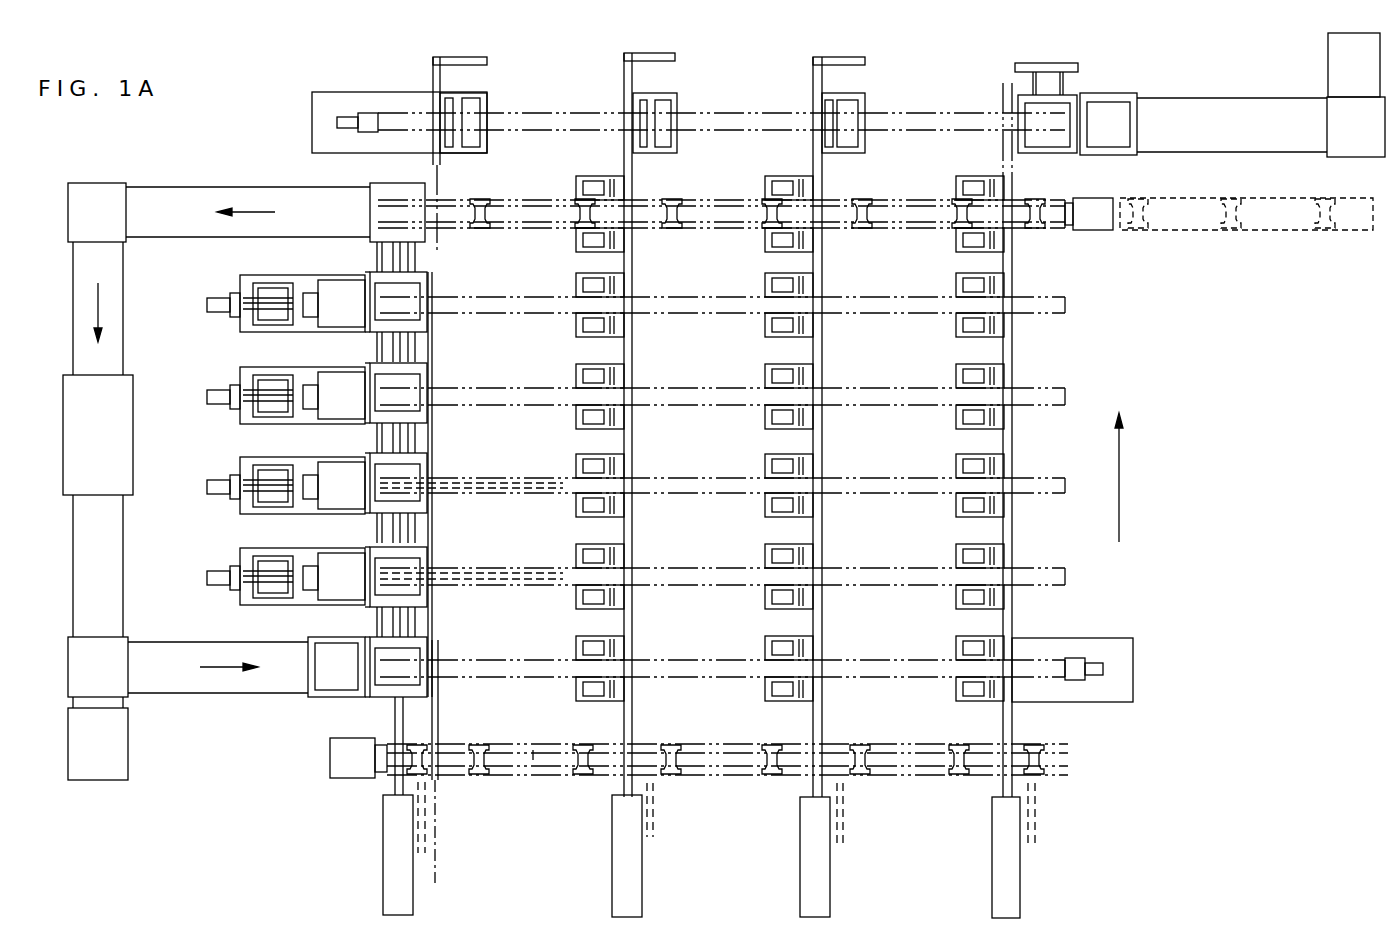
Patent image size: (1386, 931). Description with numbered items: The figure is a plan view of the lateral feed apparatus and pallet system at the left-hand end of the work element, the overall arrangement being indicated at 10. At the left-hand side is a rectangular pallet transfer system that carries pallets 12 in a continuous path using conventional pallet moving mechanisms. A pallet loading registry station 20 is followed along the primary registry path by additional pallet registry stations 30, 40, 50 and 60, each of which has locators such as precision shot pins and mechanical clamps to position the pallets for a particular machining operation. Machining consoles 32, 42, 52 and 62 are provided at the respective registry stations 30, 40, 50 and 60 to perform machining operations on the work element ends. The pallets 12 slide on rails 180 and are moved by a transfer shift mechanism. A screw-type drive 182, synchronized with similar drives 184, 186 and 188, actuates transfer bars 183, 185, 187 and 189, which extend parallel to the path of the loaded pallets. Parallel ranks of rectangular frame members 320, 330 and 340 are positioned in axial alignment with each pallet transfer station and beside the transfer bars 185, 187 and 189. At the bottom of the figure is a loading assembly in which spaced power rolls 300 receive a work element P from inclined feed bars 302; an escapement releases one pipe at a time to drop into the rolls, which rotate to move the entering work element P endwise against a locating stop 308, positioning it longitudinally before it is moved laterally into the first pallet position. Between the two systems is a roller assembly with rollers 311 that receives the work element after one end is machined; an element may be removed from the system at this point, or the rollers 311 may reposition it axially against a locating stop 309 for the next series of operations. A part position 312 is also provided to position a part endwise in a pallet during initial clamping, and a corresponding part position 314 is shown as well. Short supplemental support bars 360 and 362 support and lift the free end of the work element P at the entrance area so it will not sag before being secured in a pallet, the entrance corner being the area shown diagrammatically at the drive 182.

The conveyor frame 10 is at (1216, 89).
The pallets 12 is at (1115, 97).
The pallet loading registry station 20 is at (354, 628).
The pallet registry station 30 is at (350, 539).
The machining console 32 is at (216, 554).
The pallet registry station 40 is at (351, 449).
The machining console 42 is at (224, 458).
The pallet registry station 50 is at (352, 360).
The machining console 52 is at (224, 372).
The pallet registry station 60 is at (350, 280).
The machining console 62 is at (224, 280).
The rails 180 is at (378, 258).
The screw-type drive 182 is at (392, 833).
The transfer bar 183 is at (403, 715).
The screw-type drive 184 is at (630, 872).
The transfer bar 185 is at (633, 715).
The screw-type drive 186 is at (822, 875).
The transfer bar 187 is at (822, 717).
The screw-type drive 188 is at (1007, 882).
The transfer bar 189 is at (1012, 723).
The power rolls 300 is at (478, 776).
The inclined feed bars 302 is at (423, 830).
The locating stop 308 is at (330, 762).
The locating stop 309 is at (1093, 222).
The rollers 311 is at (480, 198).
The part position 312 is at (1072, 660).
The part position 314 is at (368, 113).
The rectangular frame members 320 is at (580, 243).
The rectangular frame members 330 is at (770, 245).
The rectangular frame members 340 is at (965, 243).
The short supplemental support bar 360 is at (440, 645).
The short bar 362 is at (1003, 157).
The work element P is at (536, 752).